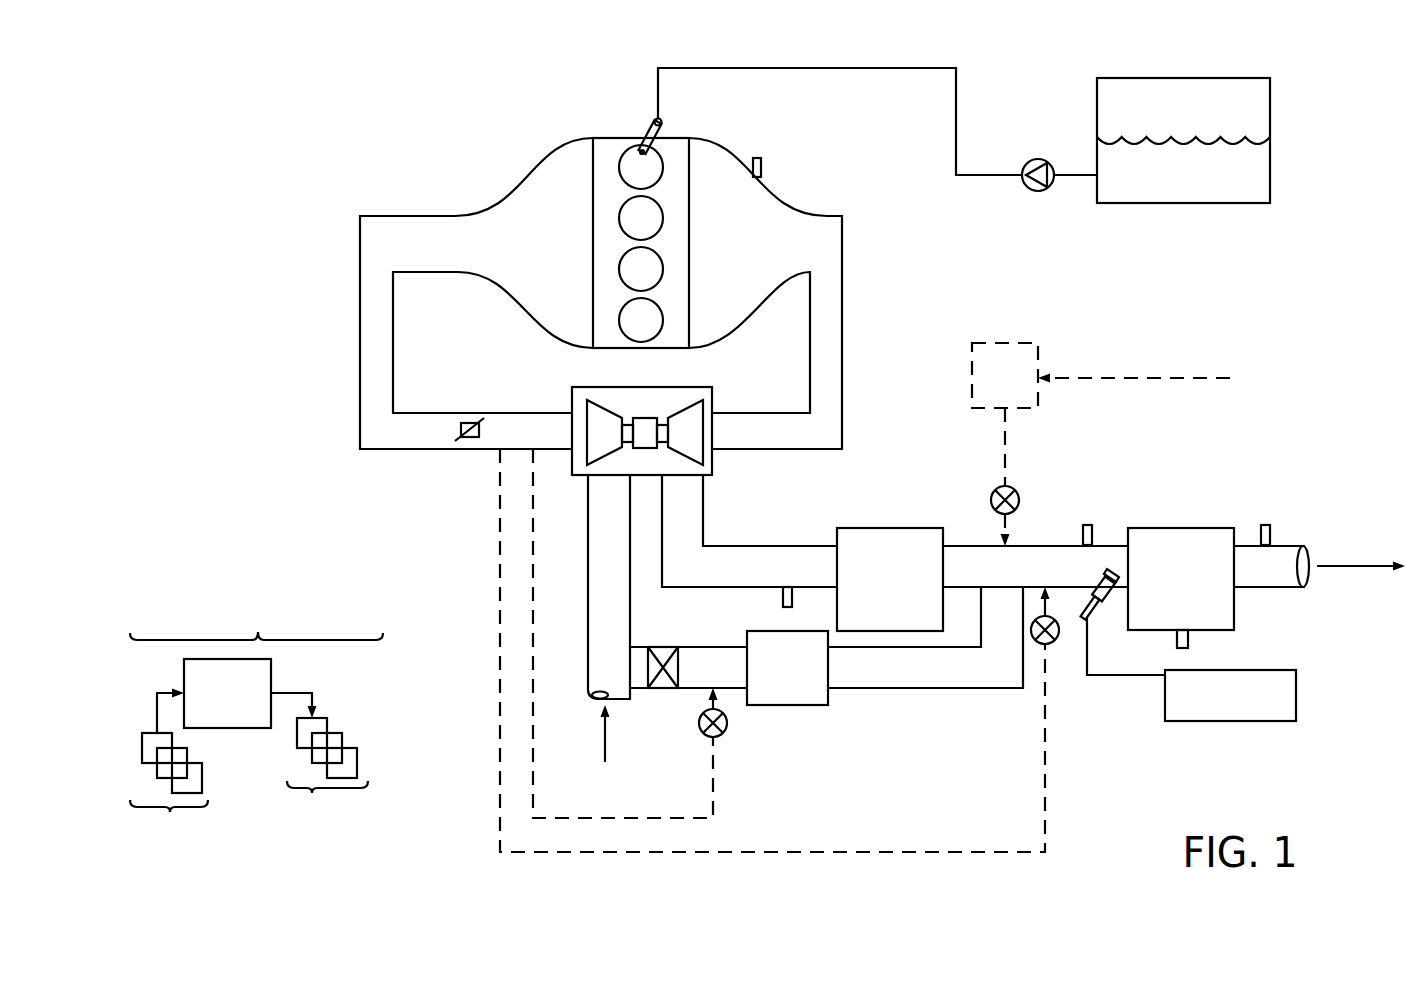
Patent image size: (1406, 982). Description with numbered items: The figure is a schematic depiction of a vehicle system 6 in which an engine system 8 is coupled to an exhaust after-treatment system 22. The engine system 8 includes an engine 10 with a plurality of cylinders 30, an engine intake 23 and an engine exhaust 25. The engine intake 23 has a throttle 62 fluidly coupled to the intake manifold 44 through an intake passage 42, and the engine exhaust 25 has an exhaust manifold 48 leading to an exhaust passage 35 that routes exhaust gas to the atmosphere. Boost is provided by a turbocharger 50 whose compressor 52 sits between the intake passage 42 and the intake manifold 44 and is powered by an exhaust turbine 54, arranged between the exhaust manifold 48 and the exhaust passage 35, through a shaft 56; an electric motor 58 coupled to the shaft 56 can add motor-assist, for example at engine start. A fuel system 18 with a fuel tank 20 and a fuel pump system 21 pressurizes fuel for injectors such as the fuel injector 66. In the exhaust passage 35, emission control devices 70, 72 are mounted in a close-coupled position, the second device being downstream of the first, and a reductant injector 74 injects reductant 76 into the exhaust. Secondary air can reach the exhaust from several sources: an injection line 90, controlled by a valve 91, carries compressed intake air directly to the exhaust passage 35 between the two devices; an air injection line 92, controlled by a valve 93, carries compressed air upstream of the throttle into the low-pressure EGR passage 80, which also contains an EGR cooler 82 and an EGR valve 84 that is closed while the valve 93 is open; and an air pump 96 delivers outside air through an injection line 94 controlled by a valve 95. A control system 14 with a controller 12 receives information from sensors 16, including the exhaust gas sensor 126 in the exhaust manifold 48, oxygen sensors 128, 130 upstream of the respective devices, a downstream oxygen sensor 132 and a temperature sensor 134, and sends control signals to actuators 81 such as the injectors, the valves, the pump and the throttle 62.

The vehicle system 6 is at (202, 95).
The engine system 8 is at (471, 121).
The engine 10 is at (690, 226).
The controller 12 is at (227, 693).
The control system 14 is at (256, 612).
The sensors 16 is at (169, 773).
The fuel system 18 is at (1201, 247).
The fuel tank 20 is at (1270, 184).
The fuel pump system 21 is at (1035, 160).
The exhaust after-treatment system 22 is at (1132, 465).
The engine intake 23 is at (487, 382).
The engine exhaust 25 is at (873, 345).
The cylinders 30 is at (663, 172).
The exhaust passage 35 is at (1282, 546).
The intake passage 42 is at (588, 648).
The intake manifold 44 is at (493, 323).
The exhaust manifold 48 is at (749, 323).
The turbocharger 50 is at (639, 387).
The compressor 52 is at (586, 417).
The exhaust turbine 54 is at (704, 417).
The shaft 56 is at (660, 447).
The electric motor 58 is at (640, 418).
The throttle 62 is at (479, 430).
The fuel injector 66 is at (651, 126).
The emission control device 70 is at (869, 528).
The emission control device 72 is at (1161, 528).
The reductant injector 74 is at (1097, 612).
The reductant 76 is at (1191, 669).
The EGR passage 80 is at (953, 688).
The actuators 81 is at (318, 765).
The EGR cooler 82 is at (757, 631).
The EGR valve 84 is at (670, 647).
The injection line 90 is at (1047, 790).
The valve 91 is at (1054, 641).
The air injection line 92 is at (714, 797).
The valve 93 is at (727, 723).
The injection line 94 is at (1006, 462).
The valve 95 is at (1018, 494).
The air pump 96 is at (1008, 343).
The exhaust gas sensor 126 is at (762, 177).
The oxygen sensor 128 is at (792, 595).
The oxygen sensor 130 is at (1087, 525).
The oxygen sensor 132 is at (1265, 525).
The temperature sensor 134 is at (1188, 640).